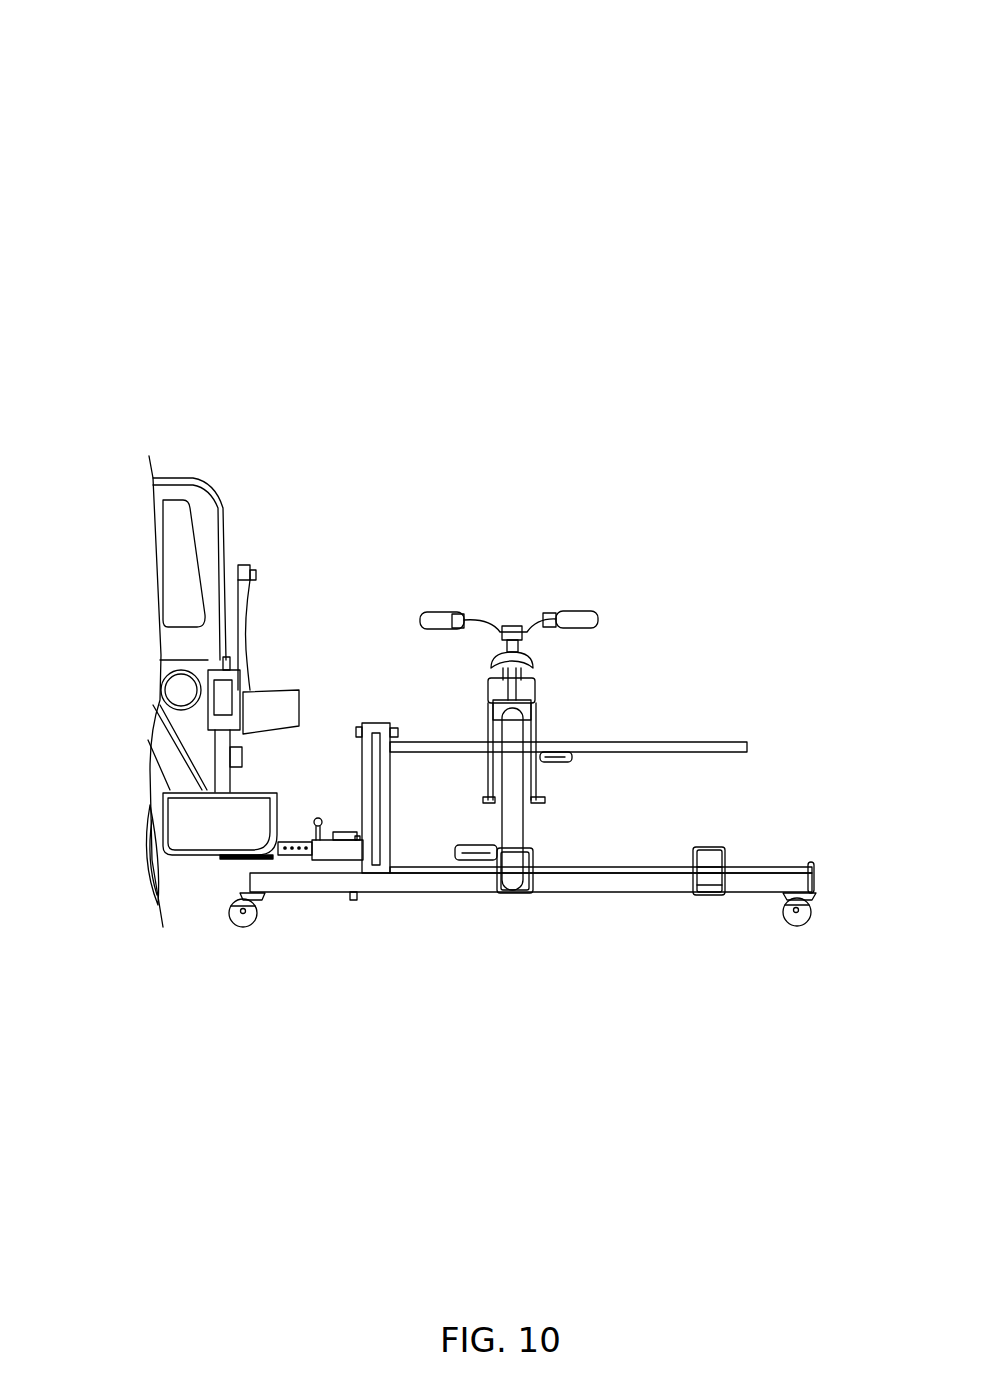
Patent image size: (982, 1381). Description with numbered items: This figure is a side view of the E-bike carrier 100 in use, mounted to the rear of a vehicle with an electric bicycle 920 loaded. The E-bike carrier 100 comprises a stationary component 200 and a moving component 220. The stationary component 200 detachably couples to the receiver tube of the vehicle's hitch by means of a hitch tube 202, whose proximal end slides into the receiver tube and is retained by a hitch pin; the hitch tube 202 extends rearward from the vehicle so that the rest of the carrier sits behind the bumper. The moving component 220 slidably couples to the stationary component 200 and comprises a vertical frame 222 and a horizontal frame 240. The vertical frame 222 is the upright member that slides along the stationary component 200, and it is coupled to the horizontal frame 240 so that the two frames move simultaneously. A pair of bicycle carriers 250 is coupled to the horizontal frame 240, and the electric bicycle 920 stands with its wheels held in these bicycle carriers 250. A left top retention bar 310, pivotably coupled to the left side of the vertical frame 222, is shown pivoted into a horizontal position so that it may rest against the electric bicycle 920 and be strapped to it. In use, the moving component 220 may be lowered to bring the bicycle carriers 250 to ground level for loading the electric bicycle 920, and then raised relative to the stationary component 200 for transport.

The E-bike carrier 100 is at (103, 194).
The stationary component 200 is at (307, 806).
The hitch tube 202 is at (302, 858).
The moving component 220 is at (467, 912).
The vertical frame 222 is at (412, 706).
The horizontal frame 240 is at (853, 843).
The bicycle carriers 250 is at (700, 888).
The left top retention bar 310 is at (672, 743).
The electric bicycle 920 is at (522, 627).